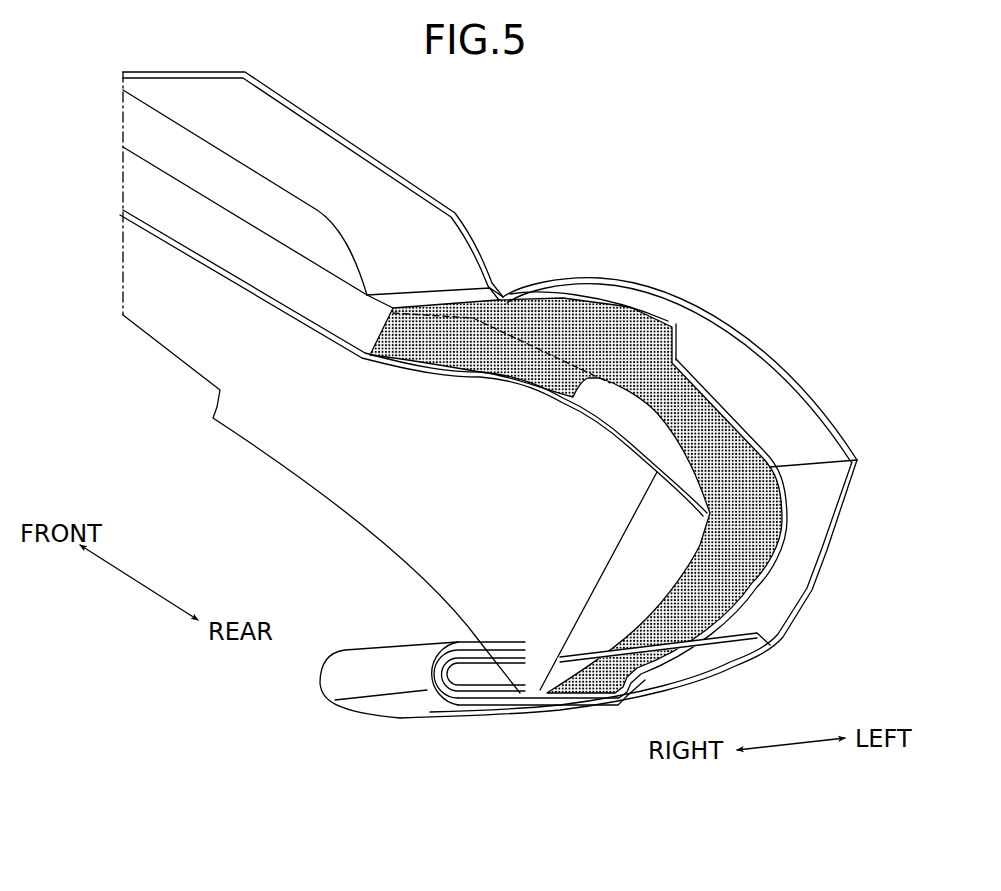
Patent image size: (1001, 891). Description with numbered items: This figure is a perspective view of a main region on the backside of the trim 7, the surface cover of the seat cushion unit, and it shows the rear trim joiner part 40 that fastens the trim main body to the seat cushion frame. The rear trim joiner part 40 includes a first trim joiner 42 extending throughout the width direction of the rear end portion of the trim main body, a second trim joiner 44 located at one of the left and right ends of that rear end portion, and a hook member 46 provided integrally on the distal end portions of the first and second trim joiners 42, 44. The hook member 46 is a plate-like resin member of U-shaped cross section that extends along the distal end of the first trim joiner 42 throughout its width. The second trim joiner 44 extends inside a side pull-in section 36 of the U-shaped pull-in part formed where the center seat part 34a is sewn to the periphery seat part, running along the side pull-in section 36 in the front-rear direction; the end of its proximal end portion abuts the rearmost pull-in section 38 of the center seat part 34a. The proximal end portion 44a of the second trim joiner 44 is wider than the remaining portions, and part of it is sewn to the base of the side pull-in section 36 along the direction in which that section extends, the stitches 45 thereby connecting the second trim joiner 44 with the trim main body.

The trim 7 is at (396, 152).
The center seat part 34a is at (745, 328).
The side pull-in section 36 is at (353, 357).
The pull-in section 38 is at (392, 308).
The rear trim joiner part 40 is at (553, 547).
The first trim joiner 42 is at (389, 734).
The second trim joiner 44 is at (578, 522).
The proximal end portion 44a is at (594, 334).
The stitches 45 is at (476, 326).
The hook member 46 is at (490, 672).